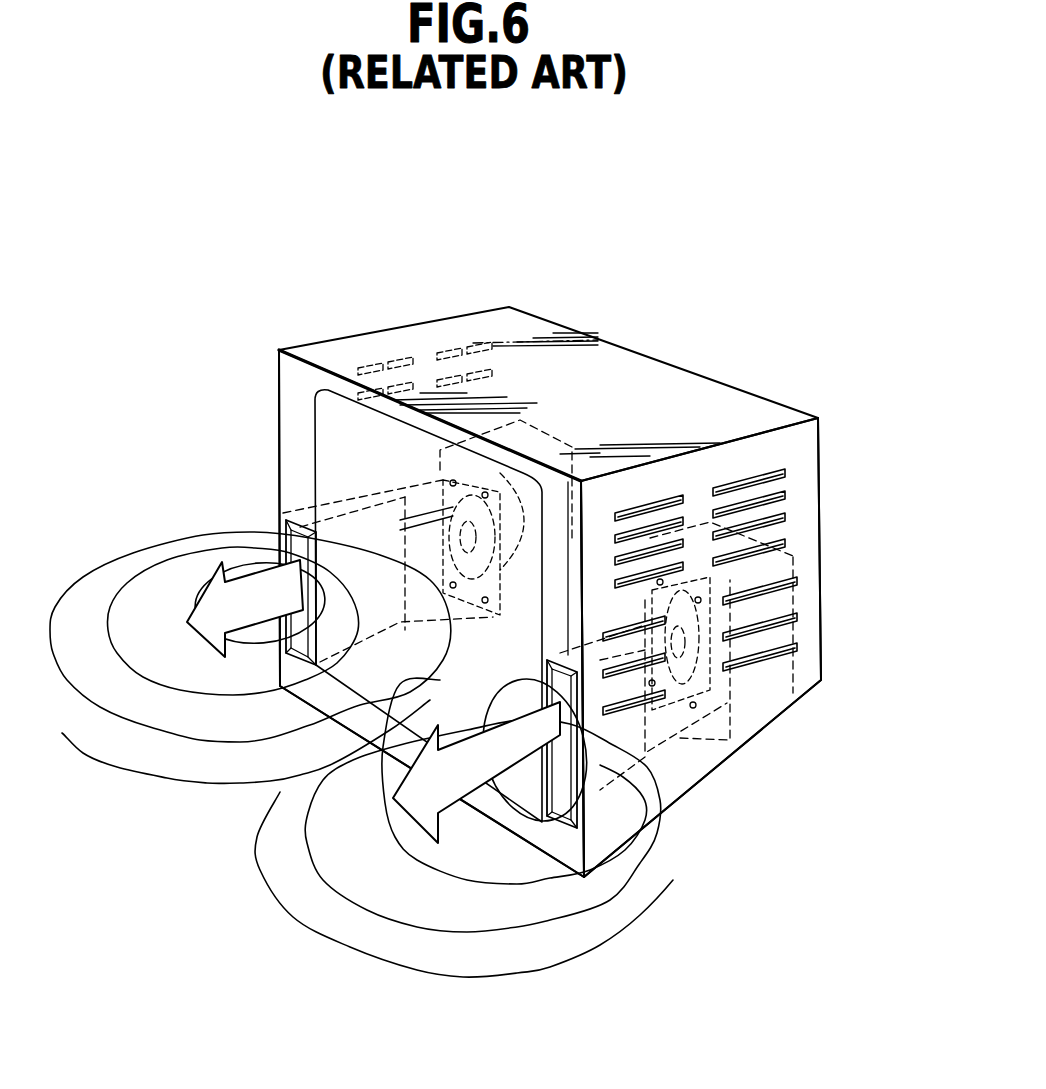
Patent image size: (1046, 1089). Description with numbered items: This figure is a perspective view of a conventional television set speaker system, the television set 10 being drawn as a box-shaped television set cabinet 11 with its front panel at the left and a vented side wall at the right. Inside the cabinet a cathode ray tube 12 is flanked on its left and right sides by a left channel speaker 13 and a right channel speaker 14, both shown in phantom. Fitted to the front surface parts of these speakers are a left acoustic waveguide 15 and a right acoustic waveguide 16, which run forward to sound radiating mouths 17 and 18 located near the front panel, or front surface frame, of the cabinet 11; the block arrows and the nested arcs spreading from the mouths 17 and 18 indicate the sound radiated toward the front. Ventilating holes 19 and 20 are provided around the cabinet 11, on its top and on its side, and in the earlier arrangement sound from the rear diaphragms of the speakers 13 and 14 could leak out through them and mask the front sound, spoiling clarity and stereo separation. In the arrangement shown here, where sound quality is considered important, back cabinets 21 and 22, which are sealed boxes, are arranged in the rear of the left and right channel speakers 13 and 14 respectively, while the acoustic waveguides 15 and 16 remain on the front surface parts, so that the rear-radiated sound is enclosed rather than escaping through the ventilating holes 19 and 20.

The television set 10 is at (664, 306).
The television set cabinet 11 is at (683, 770).
The cathode ray tube 12 is at (345, 728).
The left channel speaker 13 is at (440, 479).
The right channel speaker 14 is at (700, 710).
The left acoustic waveguide 15 is at (400, 520).
The right acoustic waveguide 16 is at (645, 803).
The sound radiating mouth 17 is at (290, 538).
The sound radiating mouth 18 is at (585, 834).
The ventilating holes 19 is at (448, 350).
The ventilating holes 20 is at (773, 470).
The back cabinet 21 is at (557, 437).
The back cabinet 22 is at (757, 532).